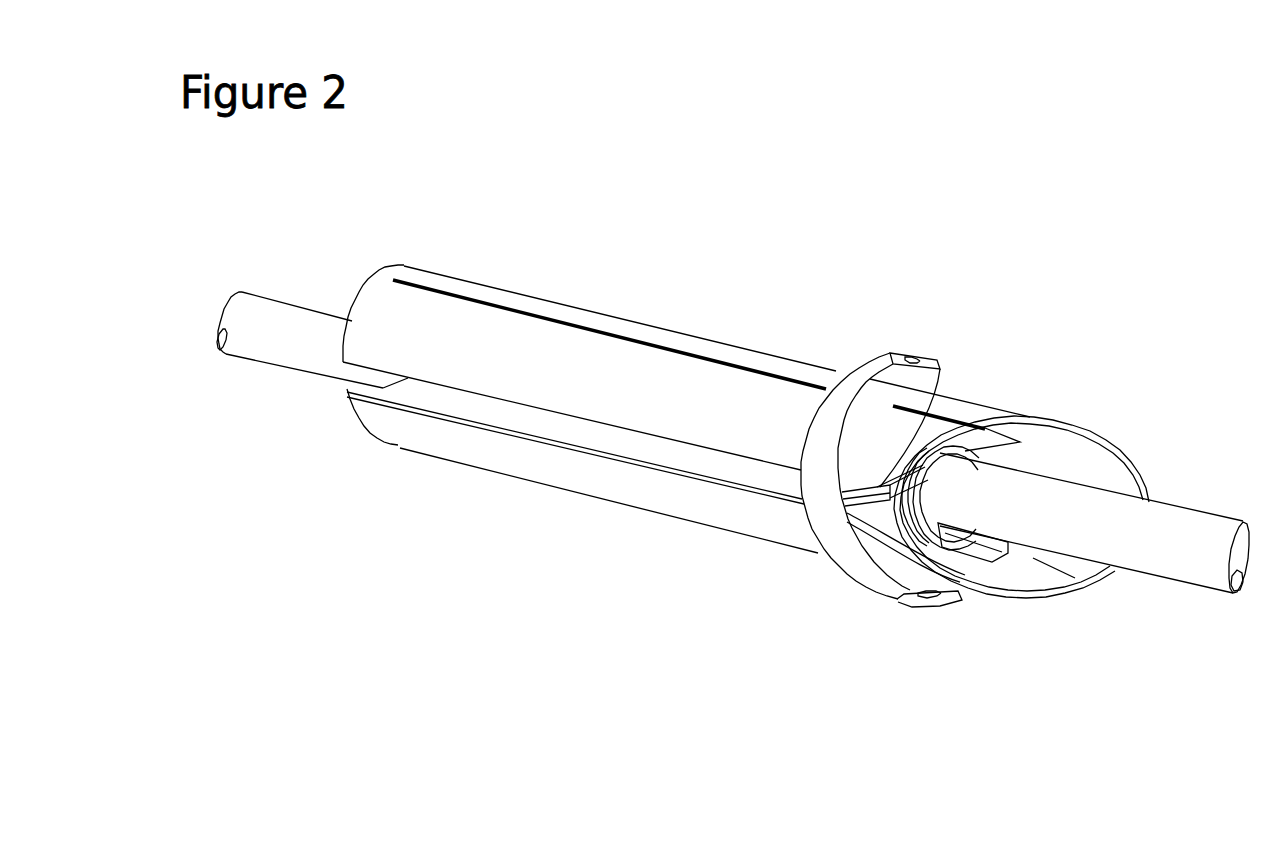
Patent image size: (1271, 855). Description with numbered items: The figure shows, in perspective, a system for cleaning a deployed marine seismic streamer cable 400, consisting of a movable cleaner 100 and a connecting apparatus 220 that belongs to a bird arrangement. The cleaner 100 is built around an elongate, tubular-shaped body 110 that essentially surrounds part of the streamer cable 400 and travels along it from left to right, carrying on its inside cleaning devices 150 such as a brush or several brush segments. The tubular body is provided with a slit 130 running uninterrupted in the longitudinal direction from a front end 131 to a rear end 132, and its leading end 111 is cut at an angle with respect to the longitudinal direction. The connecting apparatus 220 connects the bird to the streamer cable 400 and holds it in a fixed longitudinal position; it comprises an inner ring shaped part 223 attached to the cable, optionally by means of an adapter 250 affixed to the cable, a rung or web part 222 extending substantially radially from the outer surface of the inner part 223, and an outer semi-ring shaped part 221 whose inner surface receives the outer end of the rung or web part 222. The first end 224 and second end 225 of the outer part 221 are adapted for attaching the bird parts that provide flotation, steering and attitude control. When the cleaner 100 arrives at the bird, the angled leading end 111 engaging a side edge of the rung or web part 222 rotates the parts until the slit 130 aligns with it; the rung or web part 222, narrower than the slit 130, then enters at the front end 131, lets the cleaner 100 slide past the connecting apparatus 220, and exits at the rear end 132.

The cleaner 100 is at (644, 287).
The tubular-shaped body 110 is at (547, 333).
The leading end 111 is at (1132, 463).
The slit 130 is at (613, 445).
The front end 131 is at (890, 473).
The rear end 132 is at (344, 375).
The cleaning devices 150 is at (381, 390).
The connecting apparatus 220 is at (815, 583).
The outer semi-ring shaped part 221 is at (818, 450).
The rung or web part 222 is at (860, 505).
The inner ring shaped part 223 is at (900, 505).
The first end 224 is at (913, 362).
The second end 225 is at (940, 602).
The adapter 250 is at (937, 523).
The streamer cable 400 is at (288, 327).